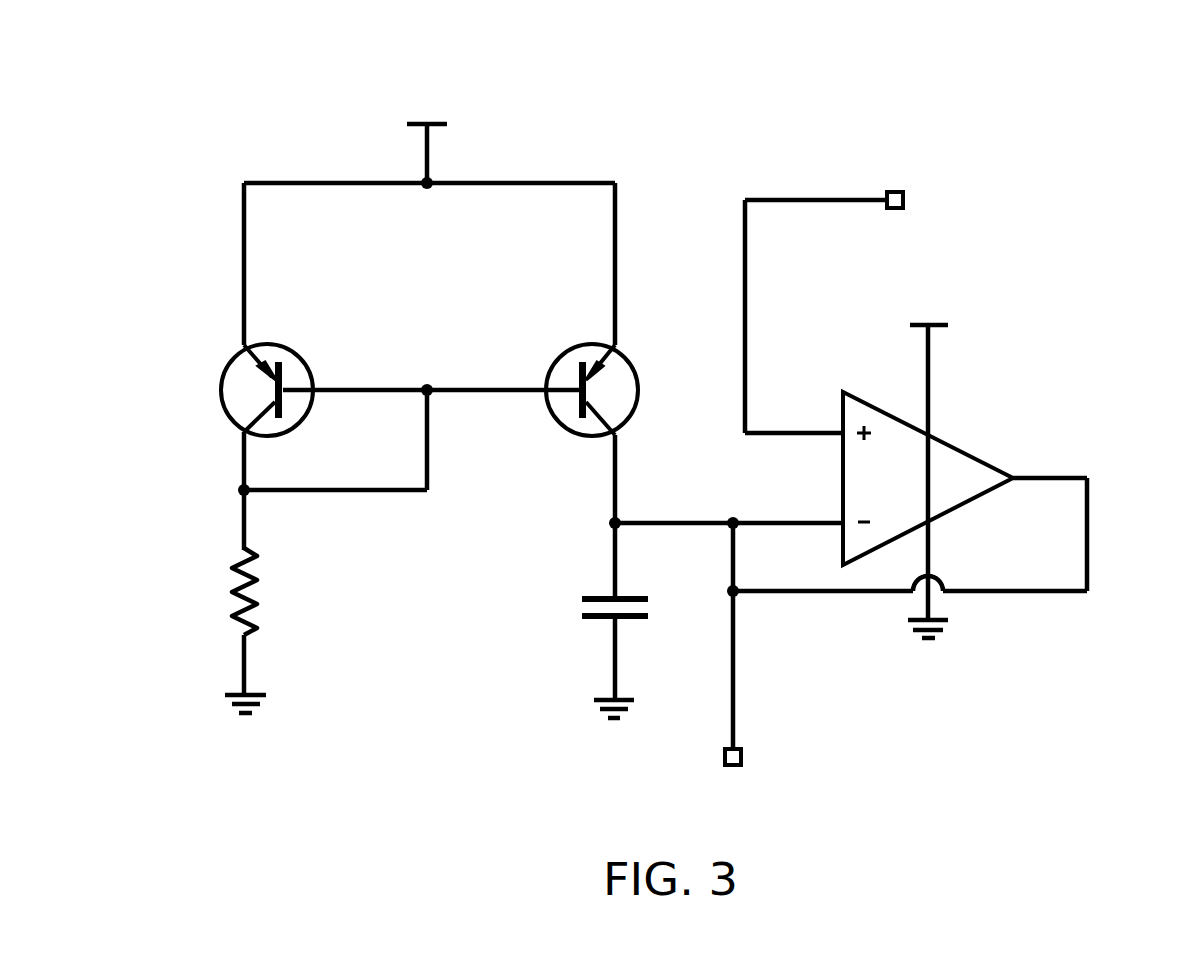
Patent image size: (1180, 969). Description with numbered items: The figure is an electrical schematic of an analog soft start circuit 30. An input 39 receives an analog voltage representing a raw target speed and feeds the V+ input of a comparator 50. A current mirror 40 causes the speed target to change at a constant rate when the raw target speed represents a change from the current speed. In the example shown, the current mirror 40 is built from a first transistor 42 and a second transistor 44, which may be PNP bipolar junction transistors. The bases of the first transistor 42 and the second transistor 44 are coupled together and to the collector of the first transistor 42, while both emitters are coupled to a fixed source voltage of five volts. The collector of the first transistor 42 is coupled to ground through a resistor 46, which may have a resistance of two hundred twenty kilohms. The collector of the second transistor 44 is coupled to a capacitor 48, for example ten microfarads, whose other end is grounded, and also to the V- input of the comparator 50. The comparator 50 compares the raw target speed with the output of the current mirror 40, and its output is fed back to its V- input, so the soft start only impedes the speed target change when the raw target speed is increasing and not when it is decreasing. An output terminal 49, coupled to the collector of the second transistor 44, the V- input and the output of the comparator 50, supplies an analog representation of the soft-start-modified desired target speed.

The soft start circuit 30 is at (685, 47).
The input 39 is at (896, 192).
The current mirror 40 is at (318, 145).
The first transistor 42 is at (232, 362).
The second transistor 44 is at (567, 362).
The resistor 46 is at (233, 601).
The capacitor 48 is at (582, 598).
The output terminal 49 is at (724, 757).
The comparator 50 is at (940, 455).